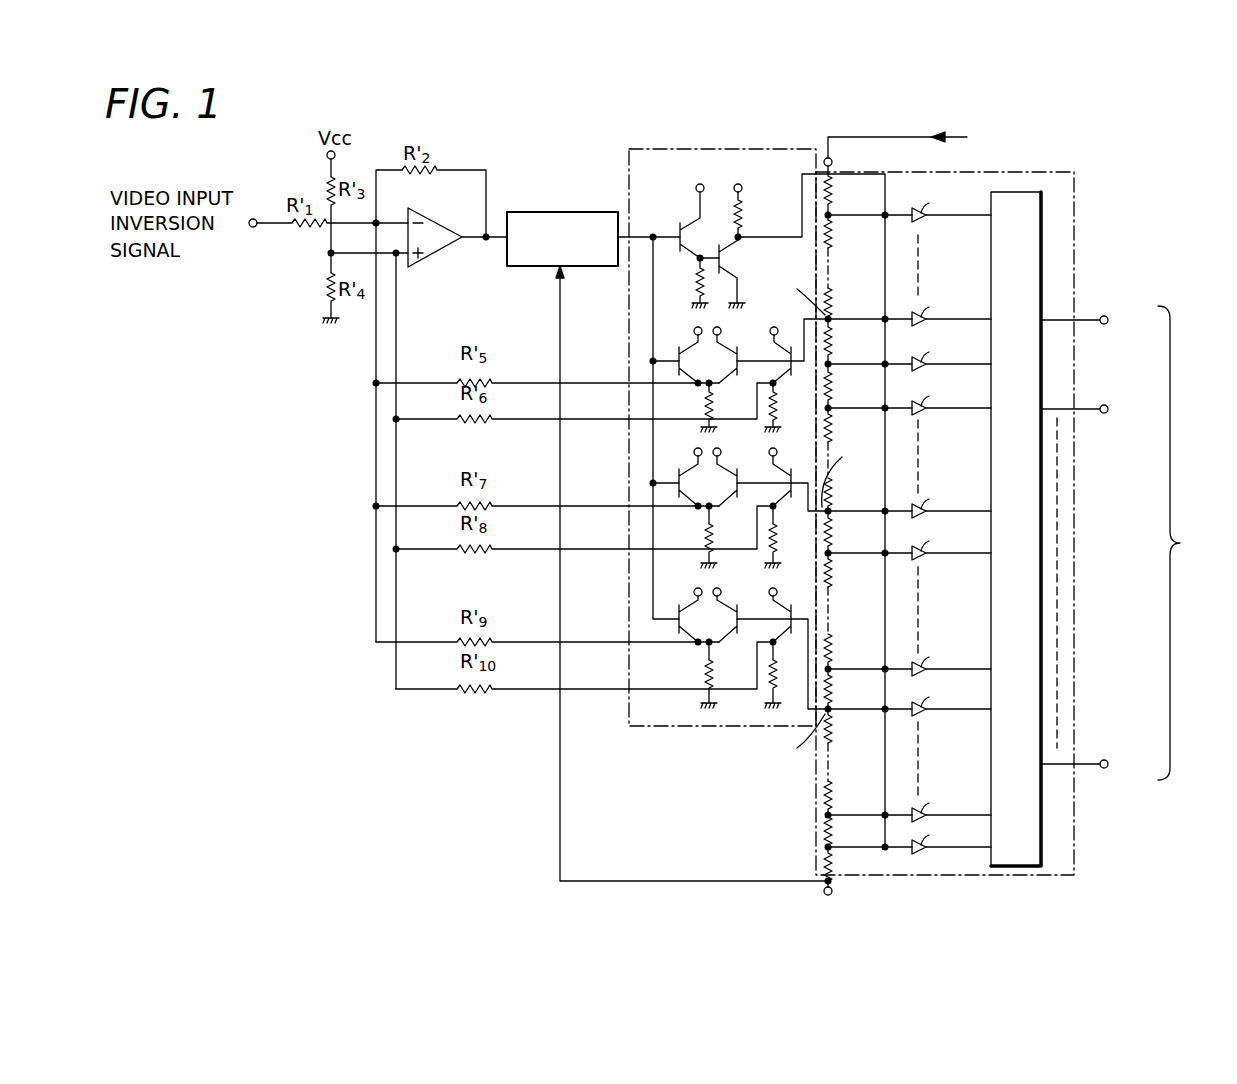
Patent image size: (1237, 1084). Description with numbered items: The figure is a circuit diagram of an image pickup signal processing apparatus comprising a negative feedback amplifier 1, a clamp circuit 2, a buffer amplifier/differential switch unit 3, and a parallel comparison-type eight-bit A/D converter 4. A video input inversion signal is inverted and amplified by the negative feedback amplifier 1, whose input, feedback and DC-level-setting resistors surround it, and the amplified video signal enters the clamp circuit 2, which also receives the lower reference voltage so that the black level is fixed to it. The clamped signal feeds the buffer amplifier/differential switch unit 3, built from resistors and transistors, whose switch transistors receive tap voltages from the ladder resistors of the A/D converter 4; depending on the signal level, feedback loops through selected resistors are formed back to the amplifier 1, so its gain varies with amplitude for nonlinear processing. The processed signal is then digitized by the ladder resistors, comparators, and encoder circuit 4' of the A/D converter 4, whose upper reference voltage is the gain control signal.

The negative feedback amplifier 1 is at (438, 256).
The clamp circuit 2 is at (560, 212).
The buffer amplifier/differential switch unit 3 is at (735, 149).
The parallel comparison-type 8-bit A/D converter 4 is at (993, 516).
The encoder circuit 4' is at (1029, 531).